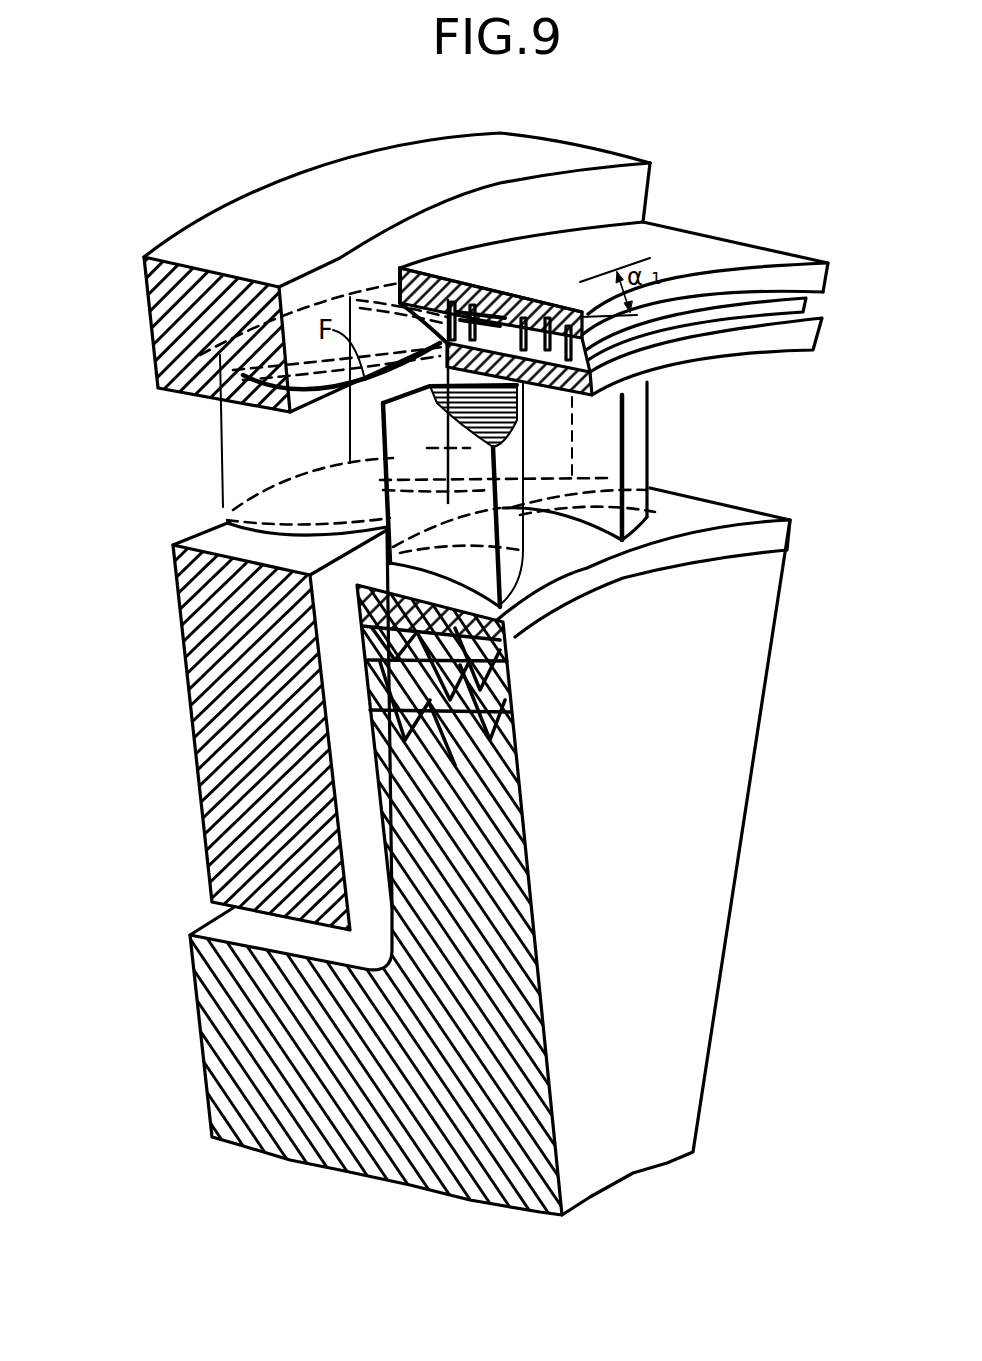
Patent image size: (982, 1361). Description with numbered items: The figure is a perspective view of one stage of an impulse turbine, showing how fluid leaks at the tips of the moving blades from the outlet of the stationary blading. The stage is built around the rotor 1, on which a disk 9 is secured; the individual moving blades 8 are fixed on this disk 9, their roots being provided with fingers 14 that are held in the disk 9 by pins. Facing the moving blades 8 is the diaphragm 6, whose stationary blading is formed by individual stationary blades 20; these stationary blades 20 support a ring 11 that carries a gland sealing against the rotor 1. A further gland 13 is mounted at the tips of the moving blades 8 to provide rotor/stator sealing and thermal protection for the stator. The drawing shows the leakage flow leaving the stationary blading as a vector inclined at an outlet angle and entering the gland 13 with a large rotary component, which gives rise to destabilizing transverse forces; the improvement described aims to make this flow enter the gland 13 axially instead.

The rotor 1 is at (222, 1050).
The diaphragm 6 is at (174, 337).
The moving blades 8 is at (640, 403).
The disk 9 is at (485, 822).
The ring 11 is at (220, 712).
The gland 13 is at (578, 397).
The fingers 14 is at (490, 722).
The stationary blades 20 is at (250, 457).